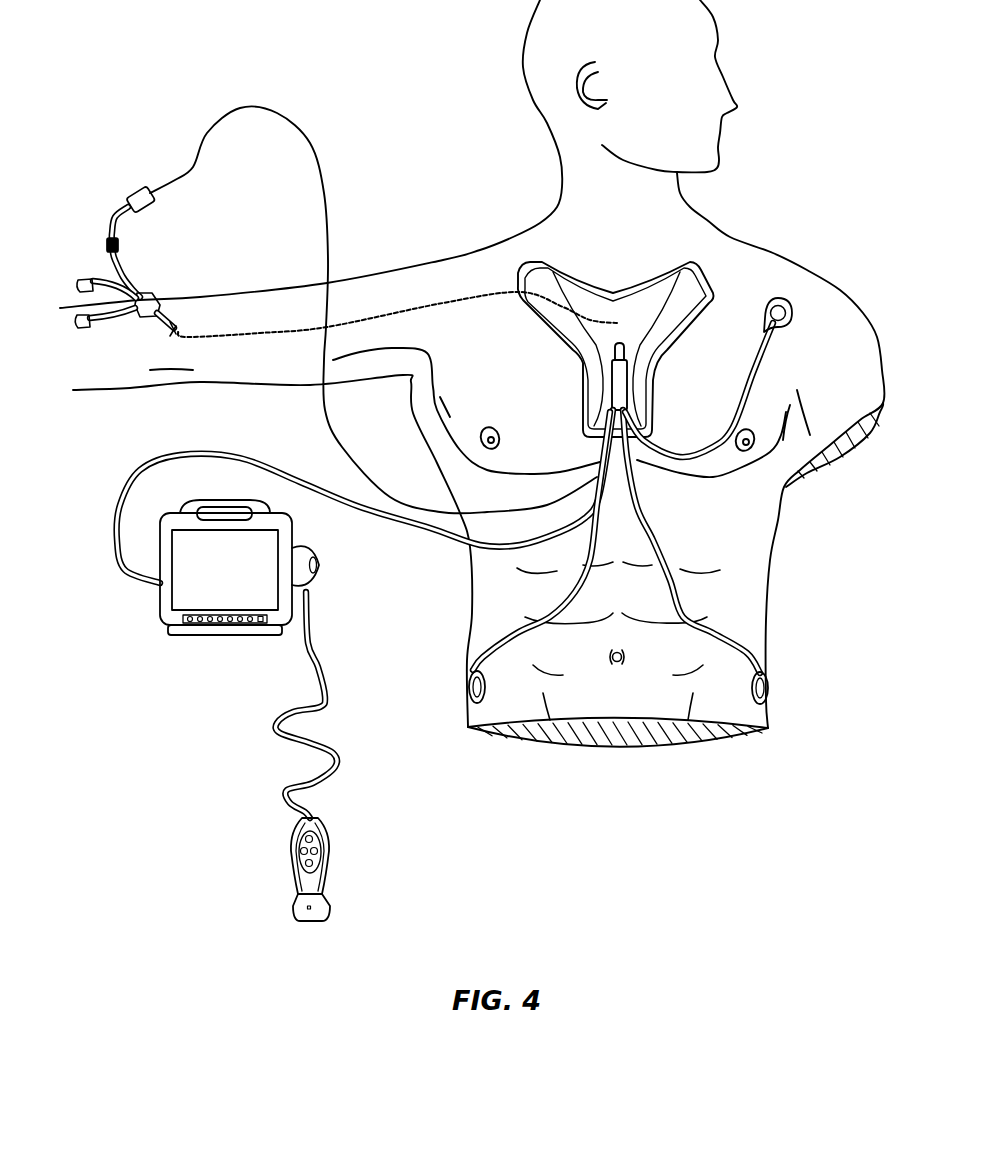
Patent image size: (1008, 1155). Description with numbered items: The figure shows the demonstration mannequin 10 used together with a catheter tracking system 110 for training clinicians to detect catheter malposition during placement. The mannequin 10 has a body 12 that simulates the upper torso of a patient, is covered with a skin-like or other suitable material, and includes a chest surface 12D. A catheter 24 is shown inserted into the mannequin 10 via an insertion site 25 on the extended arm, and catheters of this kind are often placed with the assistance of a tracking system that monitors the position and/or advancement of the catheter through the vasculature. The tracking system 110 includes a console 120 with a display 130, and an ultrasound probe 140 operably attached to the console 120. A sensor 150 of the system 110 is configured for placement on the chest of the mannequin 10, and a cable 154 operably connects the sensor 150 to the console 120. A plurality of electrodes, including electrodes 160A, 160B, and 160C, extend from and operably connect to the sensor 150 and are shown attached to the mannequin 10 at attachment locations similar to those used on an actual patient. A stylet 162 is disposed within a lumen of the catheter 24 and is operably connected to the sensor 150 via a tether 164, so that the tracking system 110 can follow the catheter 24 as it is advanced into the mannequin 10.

The demonstration mannequin 10 is at (420, 222).
The body 12 is at (738, 201).
The chest surface 12D is at (732, 534).
The catheter 24 is at (165, 318).
The insertion site 25 is at (178, 332).
The catheter tracking system 110 is at (207, 752).
The console 120 is at (174, 637).
The display 130 is at (185, 597).
The ultrasound probe 140 is at (292, 872).
The sensor 150 is at (541, 265).
The cable 154 is at (430, 527).
The electrode 160A is at (787, 303).
The electrode 160B is at (764, 698).
The electrode 160C is at (463, 697).
The stylet 162 is at (116, 214).
The tether 164 is at (193, 167).